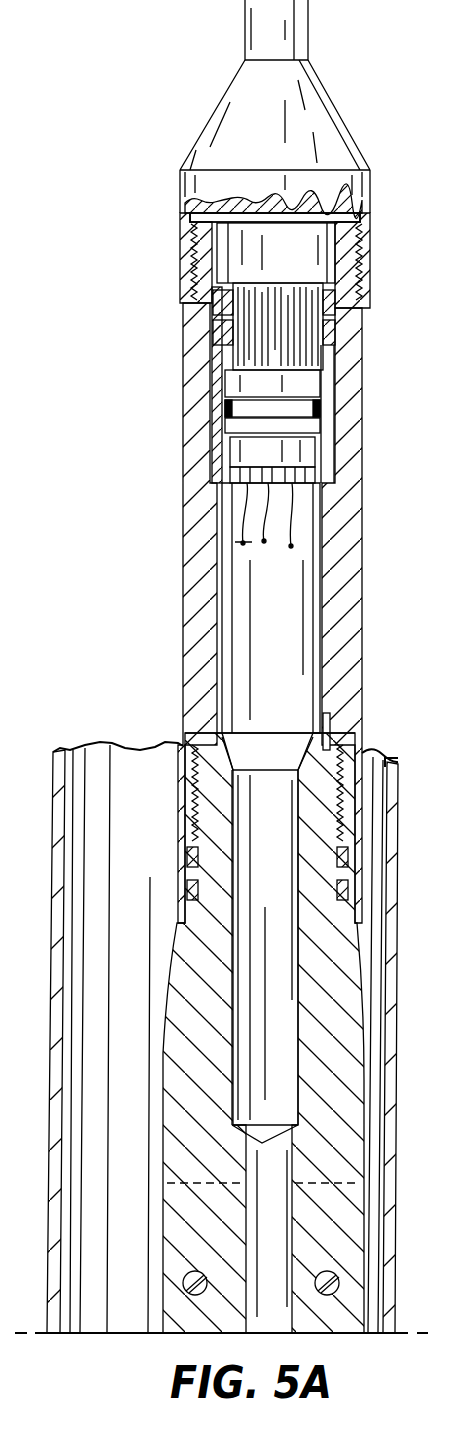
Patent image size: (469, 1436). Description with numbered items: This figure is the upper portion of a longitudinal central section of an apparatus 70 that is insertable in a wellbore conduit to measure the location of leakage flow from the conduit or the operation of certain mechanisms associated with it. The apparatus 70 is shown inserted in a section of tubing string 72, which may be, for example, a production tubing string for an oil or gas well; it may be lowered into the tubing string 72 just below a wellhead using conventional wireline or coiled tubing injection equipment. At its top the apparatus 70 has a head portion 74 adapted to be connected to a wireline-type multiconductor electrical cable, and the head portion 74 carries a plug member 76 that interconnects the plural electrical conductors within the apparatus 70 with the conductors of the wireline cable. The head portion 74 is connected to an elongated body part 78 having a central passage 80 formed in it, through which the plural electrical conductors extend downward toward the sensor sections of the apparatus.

The apparatus 70 is at (398, 708).
The tubing string 72 is at (398, 957).
The head portion 74 is at (362, 362).
The plug member 76 is at (245, 453).
The elongated body part 78 is at (365, 1072).
The central passage 80 is at (247, 1168).